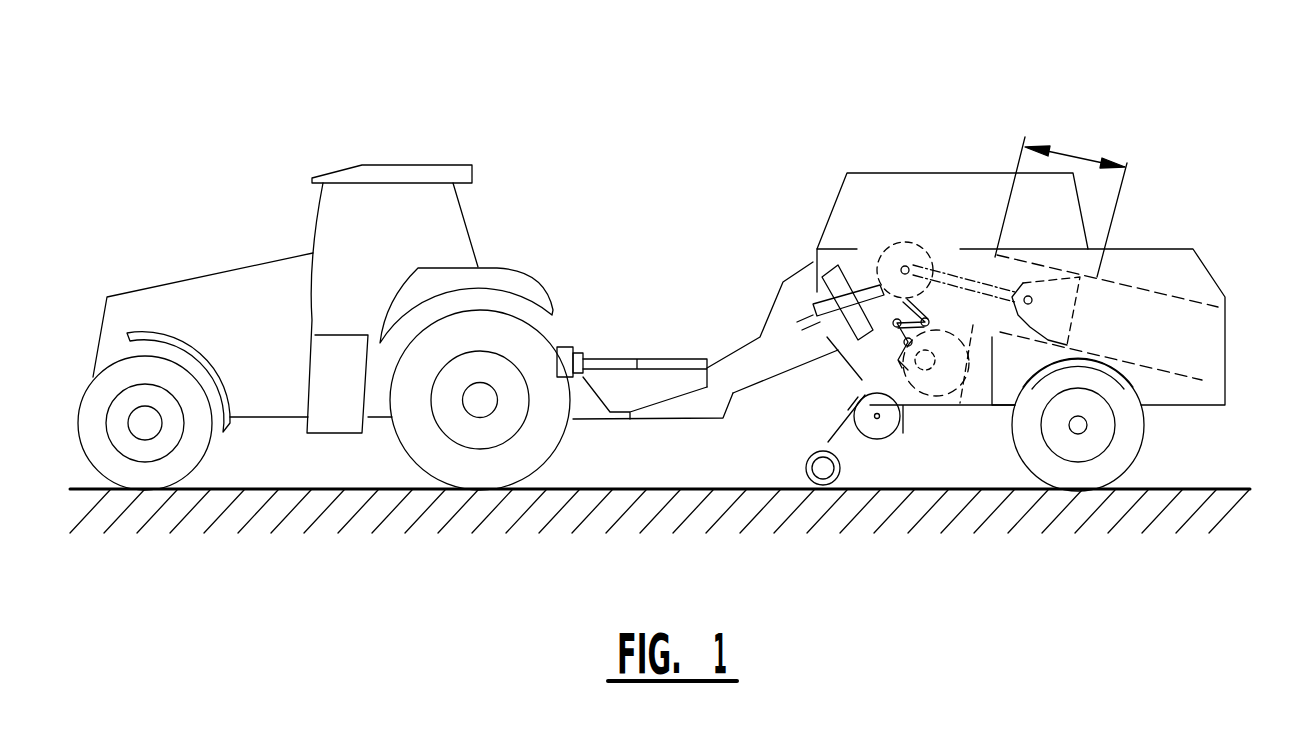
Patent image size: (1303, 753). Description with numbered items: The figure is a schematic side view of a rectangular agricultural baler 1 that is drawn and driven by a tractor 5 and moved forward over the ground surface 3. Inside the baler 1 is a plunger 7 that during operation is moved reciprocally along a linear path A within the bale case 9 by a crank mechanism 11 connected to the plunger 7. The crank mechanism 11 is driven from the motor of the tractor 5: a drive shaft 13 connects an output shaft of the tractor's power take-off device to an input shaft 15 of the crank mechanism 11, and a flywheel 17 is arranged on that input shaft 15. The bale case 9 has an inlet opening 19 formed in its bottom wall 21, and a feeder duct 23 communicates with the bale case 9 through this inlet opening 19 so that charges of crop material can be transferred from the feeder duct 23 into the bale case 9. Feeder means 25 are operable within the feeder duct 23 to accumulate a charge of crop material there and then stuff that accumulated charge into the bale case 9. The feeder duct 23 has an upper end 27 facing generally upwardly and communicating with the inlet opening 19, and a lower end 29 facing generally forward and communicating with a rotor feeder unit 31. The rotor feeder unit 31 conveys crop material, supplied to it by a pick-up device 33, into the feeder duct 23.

The rectangular agricultural baler 1 is at (1013, 100).
The ground surface 3 is at (1165, 488).
The tractor 5 is at (225, 287).
The plunger 7 is at (1062, 320).
The bale case 9 is at (1187, 338).
The crank mechanism 11 is at (931, 181).
The drive shaft 13 is at (657, 360).
The input shaft 15 is at (870, 283).
The flywheel 17 is at (812, 298).
The inlet opening 19 is at (987, 323).
The bottom wall 21 is at (1125, 370).
The feeder duct 23 is at (930, 415).
The feeder means 25 is at (930, 362).
The upper end 27 is at (953, 308).
The lower end 29 is at (917, 437).
The rotor feeder unit 31 is at (857, 450).
The pick-up device 33 is at (837, 441).
The linear path A is at (1073, 153).